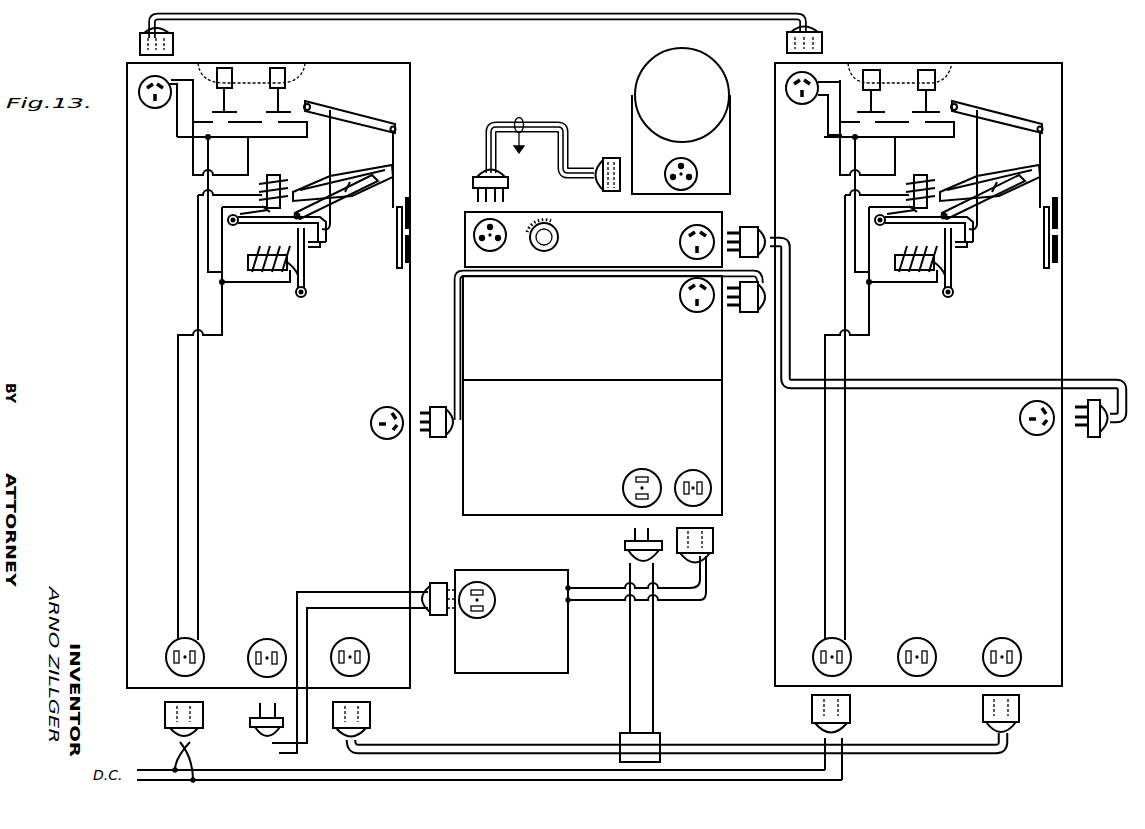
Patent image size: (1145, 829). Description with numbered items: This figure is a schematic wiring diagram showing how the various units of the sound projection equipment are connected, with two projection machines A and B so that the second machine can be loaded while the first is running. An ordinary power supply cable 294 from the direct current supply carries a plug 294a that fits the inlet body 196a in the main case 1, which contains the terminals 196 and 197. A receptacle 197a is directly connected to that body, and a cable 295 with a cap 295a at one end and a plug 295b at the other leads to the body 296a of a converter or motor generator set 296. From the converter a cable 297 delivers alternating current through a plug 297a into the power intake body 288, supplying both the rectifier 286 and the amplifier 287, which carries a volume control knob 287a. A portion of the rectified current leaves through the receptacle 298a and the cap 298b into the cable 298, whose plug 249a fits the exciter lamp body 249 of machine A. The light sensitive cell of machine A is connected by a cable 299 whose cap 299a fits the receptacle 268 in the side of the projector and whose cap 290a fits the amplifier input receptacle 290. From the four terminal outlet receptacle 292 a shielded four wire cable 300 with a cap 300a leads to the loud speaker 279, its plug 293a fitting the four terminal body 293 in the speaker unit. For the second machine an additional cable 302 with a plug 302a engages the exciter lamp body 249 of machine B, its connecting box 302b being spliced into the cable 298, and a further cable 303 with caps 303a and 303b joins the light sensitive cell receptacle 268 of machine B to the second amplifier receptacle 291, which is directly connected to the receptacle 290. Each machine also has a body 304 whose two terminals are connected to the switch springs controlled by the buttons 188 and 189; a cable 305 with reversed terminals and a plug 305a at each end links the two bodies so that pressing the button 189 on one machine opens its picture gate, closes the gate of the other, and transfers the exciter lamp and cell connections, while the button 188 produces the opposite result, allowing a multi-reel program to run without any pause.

The main case 1 is at (130, 426).
The projection machine A is at (130, 236).
The projection machine B is at (1063, 268).
The button 188 is at (224, 68).
The button 189 is at (279, 68).
The terminal 196 is at (172, 650).
The inlet body 196a is at (172, 662).
The terminal 197 is at (192, 640).
The receptacle 197a is at (268, 640).
The exciter lamp body 249 is at (376, 637).
The plug 249a is at (346, 731).
The receptacle 268 is at (373, 436).
The loud speaker 279 is at (645, 78).
The rectifier 286 is at (695, 421).
The amplifier 287 is at (698, 366).
The volume control knob 287a is at (556, 246).
The power intake body 288 is at (712, 488).
The input receptacle 290 is at (686, 303).
The cap 290a is at (746, 313).
The second receptacle 291 is at (681, 249).
The outlet receptacle 292 is at (475, 237).
The four terminal body 293 is at (697, 168).
The plug 293a is at (612, 157).
The power supply cable 294 is at (178, 752).
The plug 294a is at (167, 718).
The cable 295 is at (372, 593).
The cap 295a is at (257, 722).
The plug 295b is at (440, 619).
The converter 296 is at (500, 571).
The body 296a is at (496, 592).
The cable 297 is at (706, 590).
The plug 297a is at (713, 548).
The cable 298 is at (632, 666).
The receptacle 298a is at (650, 459).
The cap 298b is at (625, 547).
The cable 299 is at (455, 340).
The cap 299a is at (437, 441).
The four wire cable 300 is at (537, 122).
The cap 300a is at (510, 182).
The cable 302 is at (900, 741).
The plug 302a is at (1018, 712).
The connecting box 302b is at (661, 738).
The cable 303 is at (1088, 381).
The cap 303a is at (1090, 437).
The cap 303b is at (746, 227).
The body 304 is at (146, 104).
The cable 305 is at (496, 22).
The plug 305a is at (140, 45).